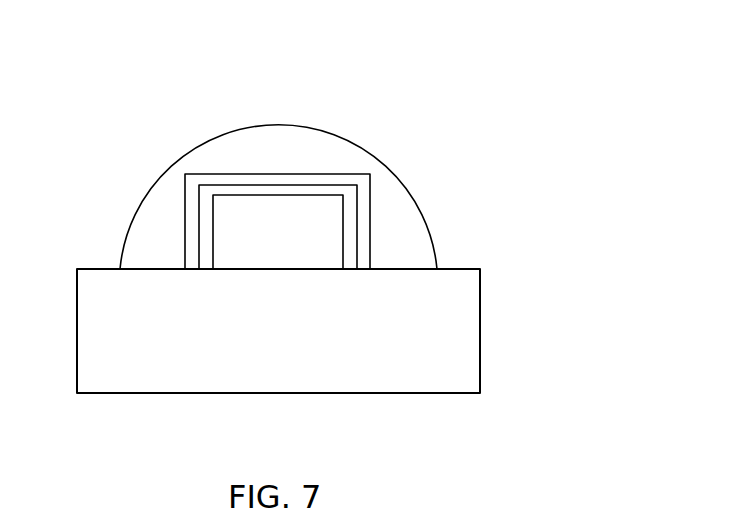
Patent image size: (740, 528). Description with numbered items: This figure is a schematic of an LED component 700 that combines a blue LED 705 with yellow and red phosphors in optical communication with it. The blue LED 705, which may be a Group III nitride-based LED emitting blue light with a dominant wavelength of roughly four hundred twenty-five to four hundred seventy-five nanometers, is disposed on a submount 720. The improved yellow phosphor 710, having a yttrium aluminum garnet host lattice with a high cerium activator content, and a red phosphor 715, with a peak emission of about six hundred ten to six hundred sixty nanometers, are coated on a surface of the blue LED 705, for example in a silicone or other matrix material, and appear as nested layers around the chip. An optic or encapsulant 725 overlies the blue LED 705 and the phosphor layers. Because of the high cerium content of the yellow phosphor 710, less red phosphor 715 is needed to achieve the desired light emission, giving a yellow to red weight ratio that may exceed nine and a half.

The LED component 700 is at (363, 172).
The blue LED 705 is at (329, 237).
The improved yellow phosphor 710 is at (348, 193).
The red phosphor 715 is at (348, 183).
The submount 720 is at (468, 323).
The encapsulant 725 is at (245, 108).